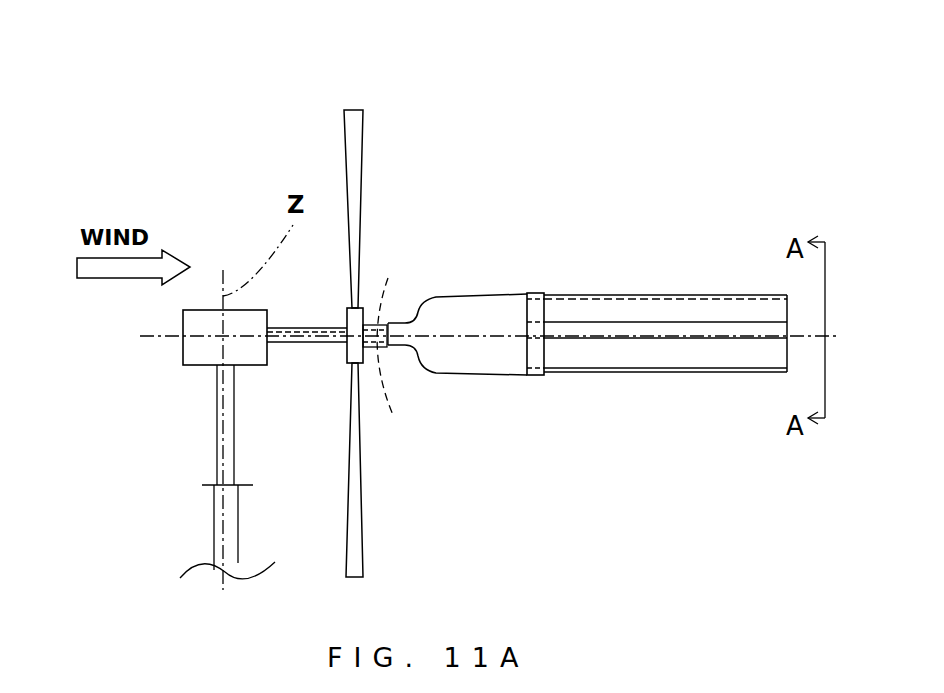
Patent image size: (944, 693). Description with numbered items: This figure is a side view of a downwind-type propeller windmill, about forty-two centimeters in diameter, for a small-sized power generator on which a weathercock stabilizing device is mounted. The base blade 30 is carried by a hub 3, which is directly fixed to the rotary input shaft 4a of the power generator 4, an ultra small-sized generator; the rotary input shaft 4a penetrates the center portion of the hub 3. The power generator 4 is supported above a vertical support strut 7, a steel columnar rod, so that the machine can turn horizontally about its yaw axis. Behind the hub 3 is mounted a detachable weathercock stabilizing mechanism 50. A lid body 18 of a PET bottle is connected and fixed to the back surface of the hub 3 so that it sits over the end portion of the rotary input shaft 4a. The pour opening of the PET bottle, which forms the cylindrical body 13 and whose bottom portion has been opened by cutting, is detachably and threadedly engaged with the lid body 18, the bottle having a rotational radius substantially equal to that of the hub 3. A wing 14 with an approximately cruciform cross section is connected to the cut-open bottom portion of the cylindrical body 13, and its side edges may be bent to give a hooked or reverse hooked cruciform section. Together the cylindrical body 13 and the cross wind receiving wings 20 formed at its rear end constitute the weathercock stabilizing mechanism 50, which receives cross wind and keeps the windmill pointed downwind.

The hub 3 is at (352, 352).
The power generator 4 is at (188, 352).
The rotary input shaft 4a is at (398, 370).
The vertical support strut 7 is at (220, 452).
The cylindrical body 13 is at (477, 365).
The wing 14 is at (712, 284).
The lid body 18 is at (388, 278).
The cross wind receiving wings 20 is at (612, 295).
The base blade 30 is at (354, 96).
The weathercock stabilizing mechanism 50 is at (546, 221).